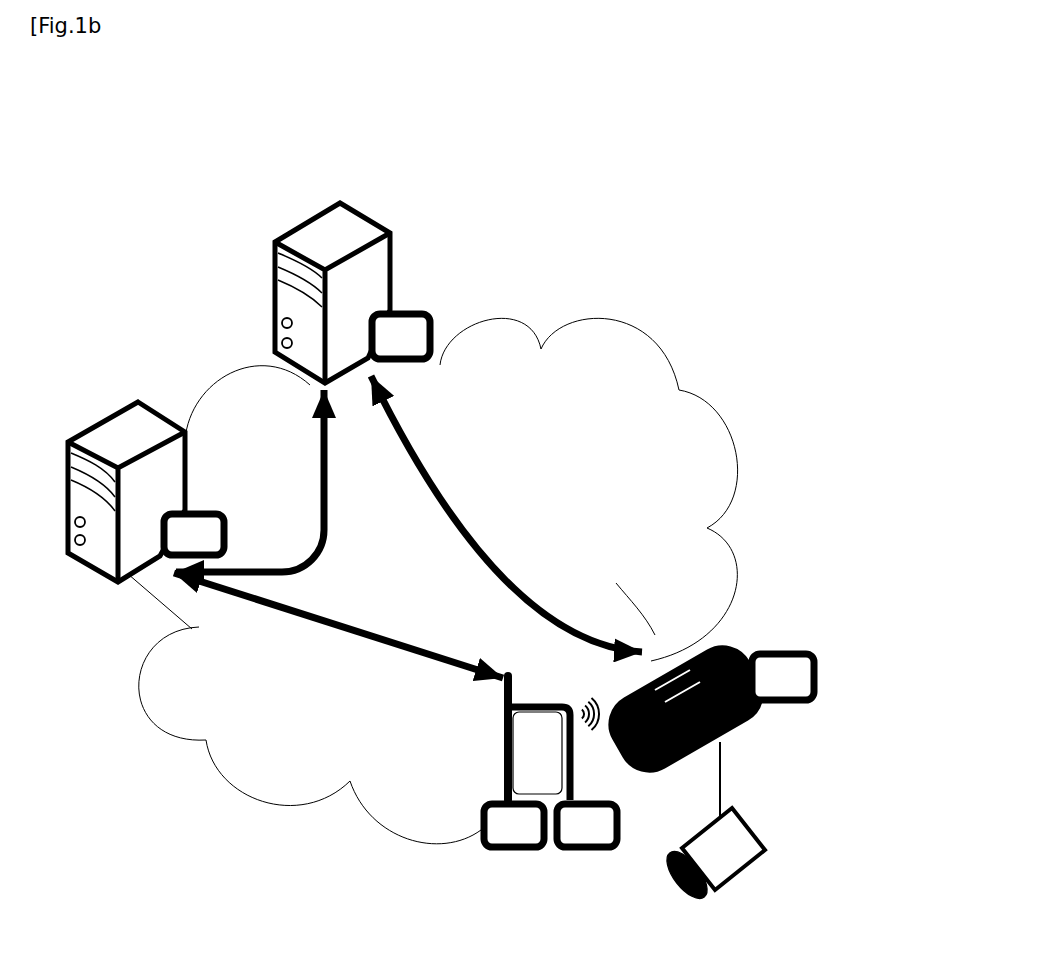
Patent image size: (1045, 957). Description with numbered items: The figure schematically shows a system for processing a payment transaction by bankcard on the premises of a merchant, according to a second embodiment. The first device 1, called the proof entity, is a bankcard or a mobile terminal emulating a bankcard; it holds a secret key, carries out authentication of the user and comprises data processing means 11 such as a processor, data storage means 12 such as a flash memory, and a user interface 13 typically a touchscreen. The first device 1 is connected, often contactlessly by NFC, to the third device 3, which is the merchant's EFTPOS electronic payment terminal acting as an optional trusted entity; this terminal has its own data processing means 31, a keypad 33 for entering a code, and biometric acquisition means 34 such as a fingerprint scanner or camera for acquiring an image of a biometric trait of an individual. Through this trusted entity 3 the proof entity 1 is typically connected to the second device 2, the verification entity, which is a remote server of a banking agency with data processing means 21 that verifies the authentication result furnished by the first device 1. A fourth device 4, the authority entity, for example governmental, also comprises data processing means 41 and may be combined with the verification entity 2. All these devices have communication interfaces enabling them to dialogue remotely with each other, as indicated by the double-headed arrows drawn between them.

The first device 1 is at (483, 816).
The data processing means 11 is at (508, 855).
The data storage means 12 is at (597, 855).
The user interface 13 is at (530, 774).
The second device 2 is at (345, 197).
The data processing means 21 is at (437, 316).
The fourth device 4 is at (140, 398).
The data processing means 41 is at (229, 511).
The third device 3 is at (752, 746).
The data processing means 31 is at (820, 656).
The keypad 33 is at (647, 672).
The biometric acquisition means 34 is at (738, 880).